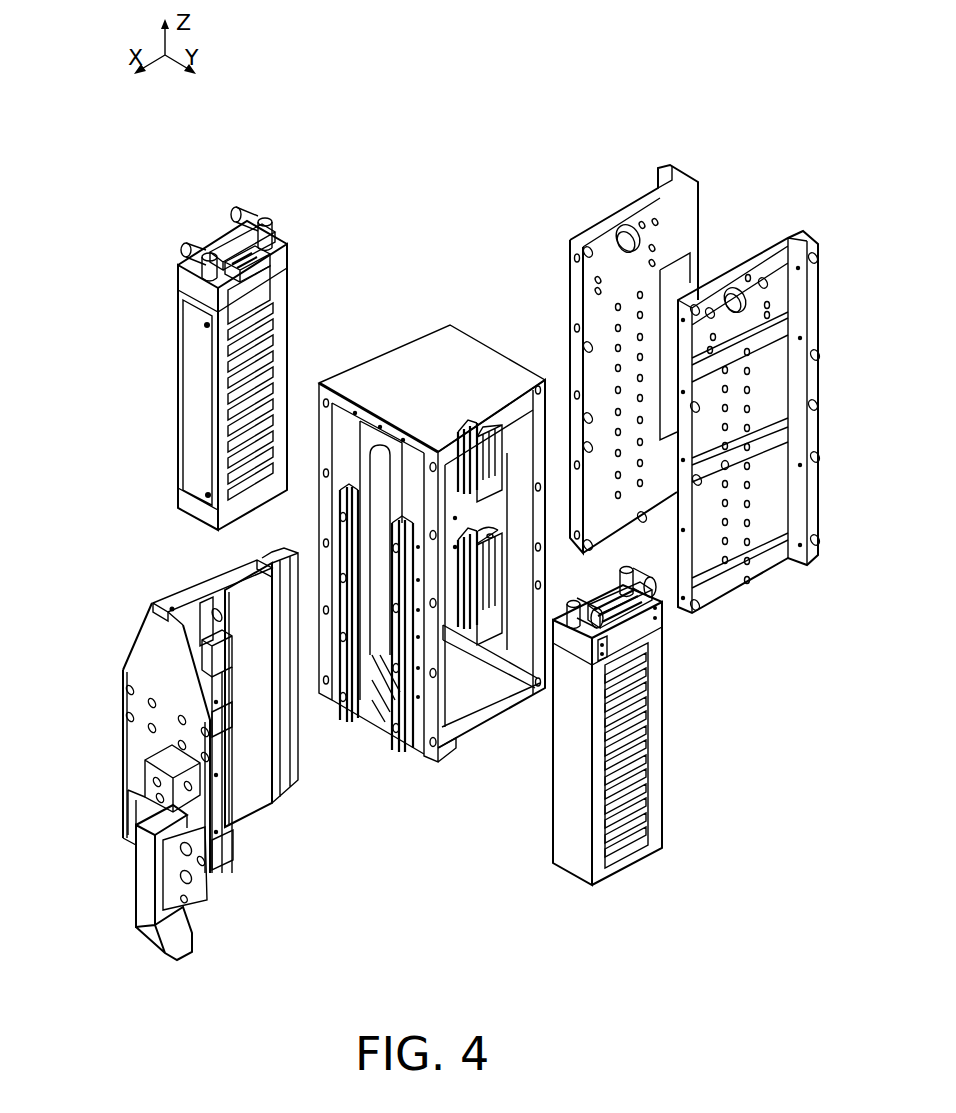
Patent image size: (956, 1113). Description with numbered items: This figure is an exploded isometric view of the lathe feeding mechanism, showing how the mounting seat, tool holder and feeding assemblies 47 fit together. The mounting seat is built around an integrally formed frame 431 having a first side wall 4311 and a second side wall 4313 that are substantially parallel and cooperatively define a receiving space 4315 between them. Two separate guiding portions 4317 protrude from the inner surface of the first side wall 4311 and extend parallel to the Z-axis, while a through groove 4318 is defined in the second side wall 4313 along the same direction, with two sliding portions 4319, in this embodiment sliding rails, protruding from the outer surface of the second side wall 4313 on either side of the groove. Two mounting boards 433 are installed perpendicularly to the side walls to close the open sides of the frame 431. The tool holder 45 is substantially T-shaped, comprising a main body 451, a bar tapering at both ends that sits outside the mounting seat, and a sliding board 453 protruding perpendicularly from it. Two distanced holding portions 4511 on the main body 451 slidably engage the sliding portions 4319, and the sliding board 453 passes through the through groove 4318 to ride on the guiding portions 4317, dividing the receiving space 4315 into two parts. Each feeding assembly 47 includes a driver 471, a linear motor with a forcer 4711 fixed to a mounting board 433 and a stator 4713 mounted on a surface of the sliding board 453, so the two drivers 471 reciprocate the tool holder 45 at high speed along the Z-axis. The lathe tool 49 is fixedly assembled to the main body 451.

The feeding assembly 47 is at (216, 218).
The driver 471 is at (99, 437).
The forcer 4711 is at (187, 460).
The stator 4713 is at (248, 597).
The tool holder 45 is at (130, 562).
The sliding board 453 is at (200, 597).
The main body 451 is at (150, 640).
The holding portion 4511 is at (235, 852).
The lathe tool 49 is at (158, 943).
The frame 431 is at (445, 345).
The first side wall 4311 is at (527, 550).
The second side wall 4313 is at (438, 742).
The receiving space 4315 is at (465, 668).
The guiding portion 4317 is at (492, 425).
The through groove 4318 is at (385, 668).
The sliding portion 4319 is at (398, 742).
The mounting board 433 is at (655, 200).